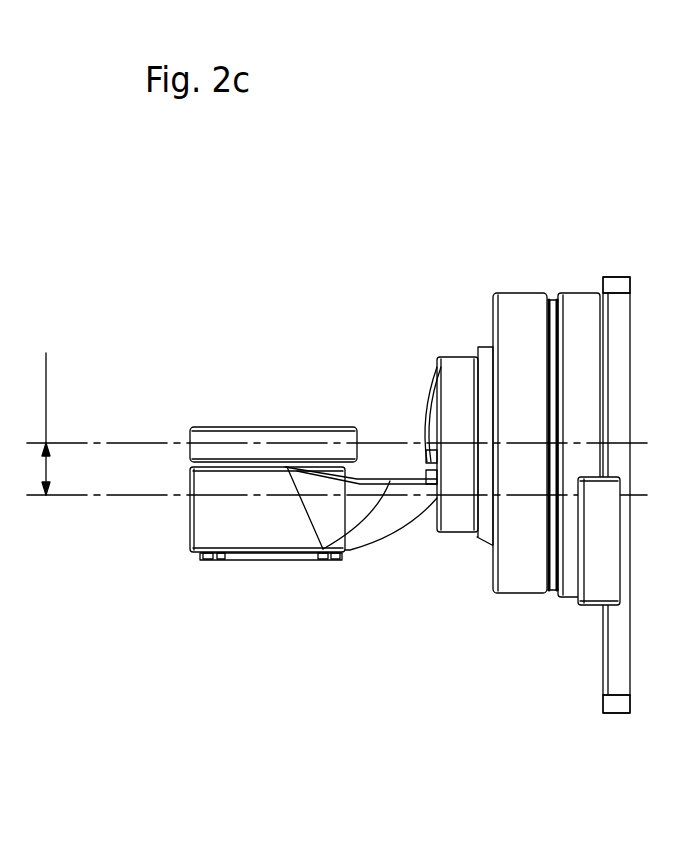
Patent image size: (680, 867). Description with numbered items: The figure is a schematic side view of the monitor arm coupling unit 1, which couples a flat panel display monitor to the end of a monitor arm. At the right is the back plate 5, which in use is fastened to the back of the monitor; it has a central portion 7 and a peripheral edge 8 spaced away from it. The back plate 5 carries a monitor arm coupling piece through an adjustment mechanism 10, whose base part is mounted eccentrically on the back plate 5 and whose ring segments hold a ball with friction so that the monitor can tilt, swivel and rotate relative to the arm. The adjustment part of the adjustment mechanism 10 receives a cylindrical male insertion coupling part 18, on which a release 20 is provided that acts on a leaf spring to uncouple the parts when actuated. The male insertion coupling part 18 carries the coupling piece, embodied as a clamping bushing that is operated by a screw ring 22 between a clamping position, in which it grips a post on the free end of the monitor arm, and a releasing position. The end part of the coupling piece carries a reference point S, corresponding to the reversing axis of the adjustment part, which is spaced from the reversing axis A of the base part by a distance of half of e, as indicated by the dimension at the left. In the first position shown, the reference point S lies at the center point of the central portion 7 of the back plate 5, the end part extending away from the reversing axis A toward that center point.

The monitor arm coupling unit 1 is at (590, 105).
The back plate 5 is at (617, 650).
The central portion 7 is at (344, 482).
The peripheral edge 8 is at (613, 267).
The adjustment mechanism 10 is at (486, 513).
The cylindrical male insertion coupling part 18 is at (462, 417).
The release 20 is at (415, 423).
The screw ring 22 is at (247, 452).
The reference point S is at (190, 497).
The reversing axis A is at (345, 430).
The distance e is at (35, 424).